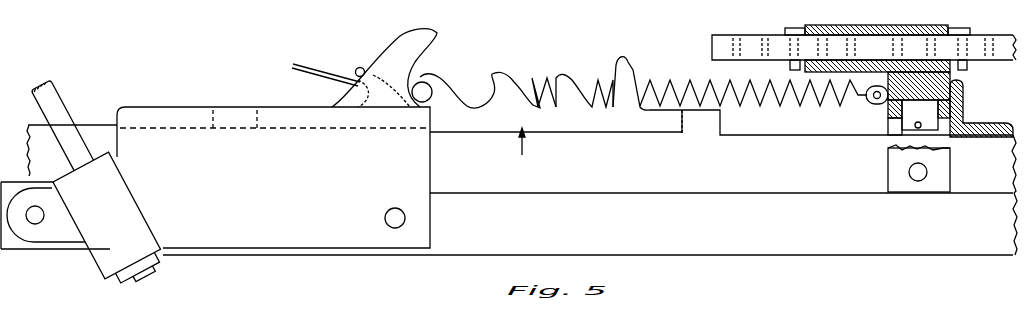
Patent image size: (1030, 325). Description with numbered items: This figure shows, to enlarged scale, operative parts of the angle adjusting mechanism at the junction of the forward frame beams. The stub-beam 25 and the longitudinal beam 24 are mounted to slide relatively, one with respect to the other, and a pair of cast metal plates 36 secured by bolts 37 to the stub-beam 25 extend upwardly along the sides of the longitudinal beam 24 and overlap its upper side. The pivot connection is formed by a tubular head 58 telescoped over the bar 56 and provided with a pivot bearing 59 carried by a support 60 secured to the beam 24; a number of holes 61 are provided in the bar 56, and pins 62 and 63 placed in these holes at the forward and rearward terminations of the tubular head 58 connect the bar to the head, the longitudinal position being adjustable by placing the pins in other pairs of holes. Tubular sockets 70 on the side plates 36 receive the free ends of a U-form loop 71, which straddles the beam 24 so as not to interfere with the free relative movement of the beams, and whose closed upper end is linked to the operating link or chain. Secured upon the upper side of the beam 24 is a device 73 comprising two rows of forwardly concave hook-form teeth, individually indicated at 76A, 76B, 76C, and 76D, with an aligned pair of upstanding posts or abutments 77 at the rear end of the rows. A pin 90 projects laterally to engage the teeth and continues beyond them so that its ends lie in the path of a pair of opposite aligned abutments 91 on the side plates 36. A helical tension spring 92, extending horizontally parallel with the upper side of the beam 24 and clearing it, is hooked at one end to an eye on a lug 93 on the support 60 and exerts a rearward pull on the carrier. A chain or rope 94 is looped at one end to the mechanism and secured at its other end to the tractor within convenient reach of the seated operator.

The longitudinal beam 24 is at (723, 151).
The stub-beam 25 is at (590, 200).
The cast metal plates 36 is at (428, 218).
The bolts 37 is at (385, 218).
The bar 56 is at (1000, 42).
The tubular head 58 is at (922, 27).
The pivot bearing 59 is at (963, 88).
The support 60 is at (963, 106).
The holes 61 is at (760, 42).
The pin 62 is at (795, 28).
The pin 63 is at (962, 30).
The tubular sockets 70 is at (123, 200).
The U-form loop 71 is at (58, 108).
The device 73 is at (520, 149).
The tooth 76A is at (360, 67).
The tooth 76B is at (437, 63).
The tooth 76C is at (494, 74).
The tooth 76D is at (560, 74).
The post or abutment 77 is at (625, 62).
The pin 90 is at (428, 92).
The abutments 91 is at (398, 42).
The helical tension spring 92 is at (688, 82).
The lug 93 is at (882, 102).
The chain or rope 94 is at (311, 68).